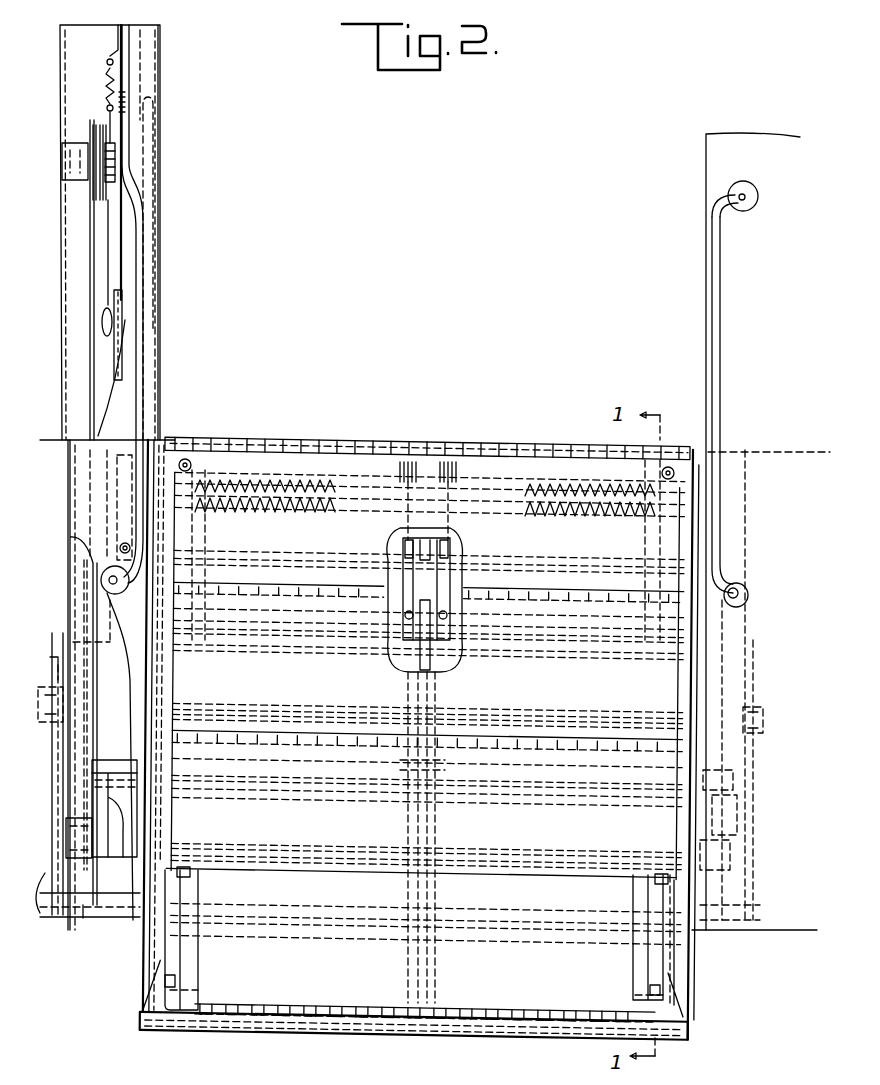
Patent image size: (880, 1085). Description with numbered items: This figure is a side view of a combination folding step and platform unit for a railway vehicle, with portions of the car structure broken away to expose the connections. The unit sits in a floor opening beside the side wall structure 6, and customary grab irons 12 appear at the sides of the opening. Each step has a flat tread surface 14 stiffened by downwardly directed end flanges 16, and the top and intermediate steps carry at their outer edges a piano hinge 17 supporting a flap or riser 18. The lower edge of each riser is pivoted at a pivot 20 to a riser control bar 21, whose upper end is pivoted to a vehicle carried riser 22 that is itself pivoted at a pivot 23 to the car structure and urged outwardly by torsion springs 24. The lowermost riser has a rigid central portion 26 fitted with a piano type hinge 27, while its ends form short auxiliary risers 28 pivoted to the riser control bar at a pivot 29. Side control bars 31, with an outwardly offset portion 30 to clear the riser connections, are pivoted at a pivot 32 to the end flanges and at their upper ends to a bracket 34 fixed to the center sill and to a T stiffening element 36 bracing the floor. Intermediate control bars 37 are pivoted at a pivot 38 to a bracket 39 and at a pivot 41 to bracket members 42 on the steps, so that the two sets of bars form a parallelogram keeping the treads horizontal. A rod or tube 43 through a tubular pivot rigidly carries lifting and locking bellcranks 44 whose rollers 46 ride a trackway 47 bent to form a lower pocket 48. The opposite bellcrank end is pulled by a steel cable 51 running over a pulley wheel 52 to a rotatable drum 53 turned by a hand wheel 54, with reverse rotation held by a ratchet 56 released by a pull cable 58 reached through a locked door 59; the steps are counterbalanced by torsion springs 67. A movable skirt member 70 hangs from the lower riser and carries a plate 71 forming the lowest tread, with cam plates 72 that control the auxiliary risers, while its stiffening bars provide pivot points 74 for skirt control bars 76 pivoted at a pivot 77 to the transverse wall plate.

The side wall structure 6 is at (133, 45).
The grab irons 12 is at (148, 292).
The tread surface 14 is at (505, 872).
The end flanges 16 is at (178, 620).
The hinge 17 is at (525, 598).
The flap or riser 18 is at (430, 748).
The pivot 20 is at (246, 558).
The riser control bar 21 is at (150, 980).
The vehicle carried riser 22 is at (429, 508).
The pivot 23 is at (355, 443).
The torsion springs 24 is at (445, 470).
The central portion of lowermost riser 26 is at (370, 962).
The piano type hinge 27 is at (522, 1000).
The auxiliary risers 28 is at (417, 940).
The pivot 29 is at (190, 988).
The offset portion 30 is at (150, 709).
The side control bars 31 is at (170, 450).
The pivot 32 is at (620, 652).
The bracket 34 is at (194, 531).
The T stiffening element 36 is at (686, 452).
The intermediate control bars 37 is at (395, 660).
The pivot 38 is at (448, 550).
The bracket 39 is at (428, 548).
The pivot 41 is at (436, 990).
The bracket members 42 is at (430, 640).
The rod or tube 43 is at (522, 790).
The lifting and locking bellcranks 44 is at (100, 817).
The rollers 46 is at (76, 860).
The trackway 47 is at (92, 672).
The lower pocket 48 is at (83, 918).
The steel cable 51 is at (92, 392).
The pulley wheel 52 is at (98, 185).
The rotatable drum 53 is at (97, 112).
The hand wheel 54 is at (153, 100).
The ratchet 56 is at (118, 148).
The pull cable 58 is at (108, 260).
The door 59 is at (120, 353).
The torsion springs 67 is at (320, 485).
The movable skirt member 70 is at (386, 1033).
The plate 71 is at (316, 1012).
The cam plates 72 is at (185, 978).
The pivot points 74 is at (118, 900).
The skirt control bars 76 is at (766, 815).
The pivot 77 is at (773, 715).